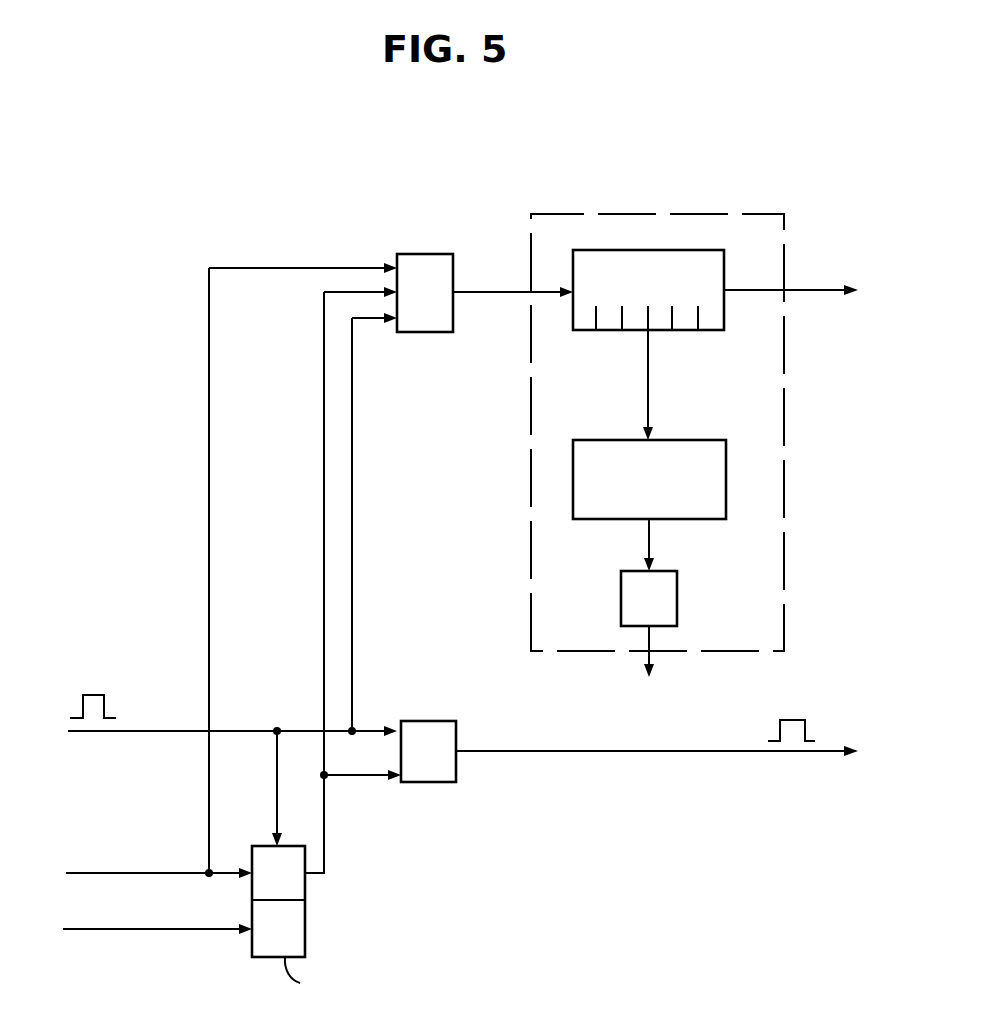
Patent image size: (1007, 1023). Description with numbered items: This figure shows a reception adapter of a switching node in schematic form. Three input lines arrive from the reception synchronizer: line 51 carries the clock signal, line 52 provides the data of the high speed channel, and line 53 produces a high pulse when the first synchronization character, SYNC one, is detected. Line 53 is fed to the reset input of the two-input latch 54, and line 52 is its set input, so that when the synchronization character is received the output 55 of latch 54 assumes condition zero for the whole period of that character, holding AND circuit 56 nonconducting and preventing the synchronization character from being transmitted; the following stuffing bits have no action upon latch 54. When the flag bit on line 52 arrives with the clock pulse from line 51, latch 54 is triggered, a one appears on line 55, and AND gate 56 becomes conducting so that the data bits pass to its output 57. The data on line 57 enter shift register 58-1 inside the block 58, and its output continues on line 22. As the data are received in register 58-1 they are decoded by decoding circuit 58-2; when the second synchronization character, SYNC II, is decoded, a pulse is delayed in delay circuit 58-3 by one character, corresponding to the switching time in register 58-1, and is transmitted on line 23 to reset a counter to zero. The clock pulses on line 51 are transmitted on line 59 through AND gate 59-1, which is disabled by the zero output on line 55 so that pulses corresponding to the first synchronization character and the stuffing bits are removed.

The output line of shift register 22 is at (806, 288).
The line 23 is at (649, 665).
The line 51 is at (150, 733).
The line 52 is at (120, 872).
The line 53 is at (122, 928).
The two-input latch 54 is at (306, 935).
The output of latch 55 is at (325, 825).
The AND circuit 56 is at (428, 254).
The output of AND circuit 57 is at (490, 293).
The register and decoding assembly 58 is at (683, 214).
The shift register 58-1 is at (683, 330).
The decoding circuit 58-2 is at (606, 440).
The delay circuit 58-3 is at (677, 582).
The line 59 is at (727, 752).
The AND gate 59-1 is at (457, 728).